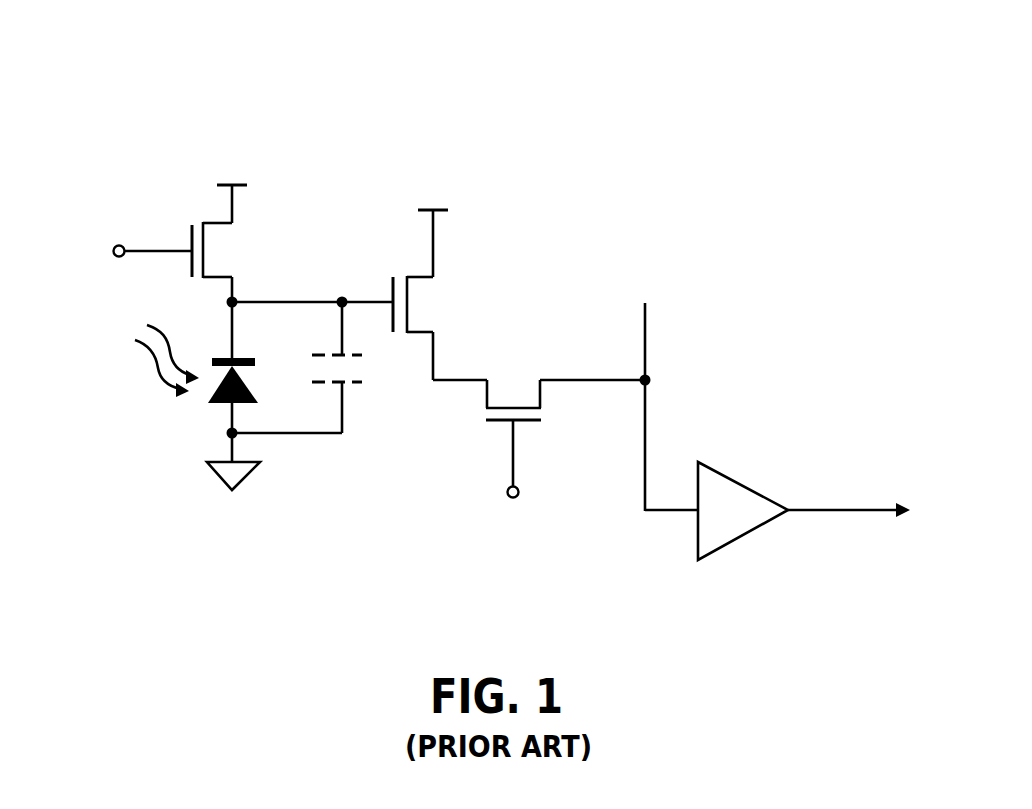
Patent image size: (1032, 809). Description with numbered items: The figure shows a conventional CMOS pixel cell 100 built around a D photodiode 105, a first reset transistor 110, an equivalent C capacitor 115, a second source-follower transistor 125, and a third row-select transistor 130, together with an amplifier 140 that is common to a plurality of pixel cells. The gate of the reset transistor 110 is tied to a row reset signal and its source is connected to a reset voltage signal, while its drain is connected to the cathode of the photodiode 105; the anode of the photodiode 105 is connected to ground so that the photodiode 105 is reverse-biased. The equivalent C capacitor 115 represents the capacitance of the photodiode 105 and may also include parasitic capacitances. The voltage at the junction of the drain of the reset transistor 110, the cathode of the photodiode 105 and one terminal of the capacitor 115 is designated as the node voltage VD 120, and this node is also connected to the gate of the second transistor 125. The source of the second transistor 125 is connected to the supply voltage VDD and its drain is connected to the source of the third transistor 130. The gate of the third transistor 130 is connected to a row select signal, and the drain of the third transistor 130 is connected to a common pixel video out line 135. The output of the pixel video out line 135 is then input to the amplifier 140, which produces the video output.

The CMOS pixel cell 100 is at (477, 106).
The D photodiode 105 is at (210, 404).
The M1 transistor 110 is at (228, 241).
The equivalent C capacitor 115 is at (357, 405).
The VD 120 is at (357, 296).
The M2 transistor 125 is at (430, 288).
The M3 transistor 130 is at (535, 373).
The pixel video out line 135 is at (703, 407).
The amplifier 140 is at (757, 531).